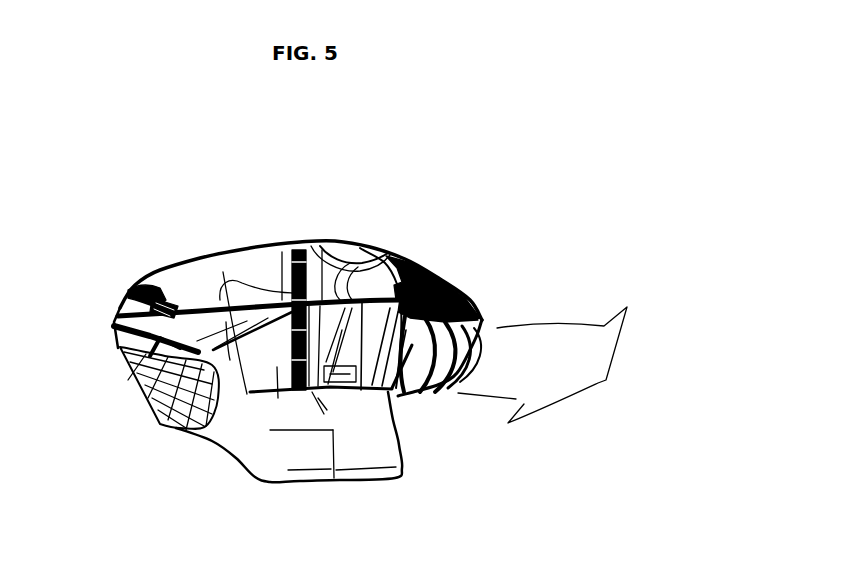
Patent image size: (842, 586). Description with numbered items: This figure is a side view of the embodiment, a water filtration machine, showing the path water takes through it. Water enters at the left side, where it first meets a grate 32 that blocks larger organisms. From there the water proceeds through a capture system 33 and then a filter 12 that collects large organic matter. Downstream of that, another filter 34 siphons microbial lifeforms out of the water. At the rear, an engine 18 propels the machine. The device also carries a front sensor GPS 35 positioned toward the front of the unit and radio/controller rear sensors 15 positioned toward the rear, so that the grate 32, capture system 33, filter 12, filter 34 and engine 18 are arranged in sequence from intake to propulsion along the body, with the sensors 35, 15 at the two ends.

The filter 12 is at (296, 244).
The radio/controller rear sensors 15 is at (428, 266).
The engine 18 is at (472, 362).
The grate 32 is at (160, 426).
The capture system 33 is at (255, 370).
The filter 34 is at (355, 246).
The front sensor GPS 35 is at (132, 294).